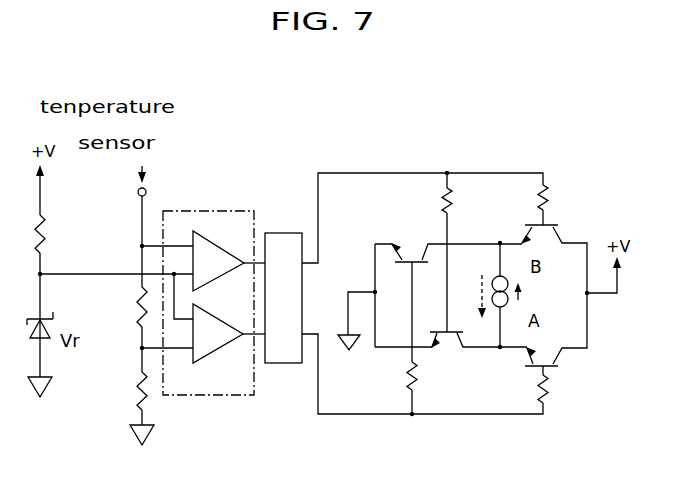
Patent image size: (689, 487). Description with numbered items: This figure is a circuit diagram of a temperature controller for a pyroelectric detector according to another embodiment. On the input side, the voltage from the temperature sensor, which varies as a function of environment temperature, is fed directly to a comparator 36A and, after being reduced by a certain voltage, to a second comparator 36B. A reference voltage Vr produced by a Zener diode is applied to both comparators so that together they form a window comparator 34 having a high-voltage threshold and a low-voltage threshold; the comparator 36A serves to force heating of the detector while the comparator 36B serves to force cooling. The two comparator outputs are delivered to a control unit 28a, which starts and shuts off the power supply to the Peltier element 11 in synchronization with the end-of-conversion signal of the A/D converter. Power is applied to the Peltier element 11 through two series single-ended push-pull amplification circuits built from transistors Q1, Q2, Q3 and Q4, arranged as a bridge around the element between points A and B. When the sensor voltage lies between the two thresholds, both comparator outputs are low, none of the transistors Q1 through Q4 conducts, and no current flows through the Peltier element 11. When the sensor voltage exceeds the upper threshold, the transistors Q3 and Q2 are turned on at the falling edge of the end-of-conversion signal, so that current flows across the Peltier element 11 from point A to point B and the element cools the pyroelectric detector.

The window comparator 34 is at (177, 211).
The comparator 36A is at (215, 240).
The comparator 36B is at (220, 355).
The control unit 28a is at (290, 232).
The Peltier element 11 is at (493, 277).
The transistor Q1 is at (556, 256).
The transistor Q2 is at (448, 316).
The transistor Q3 is at (558, 336).
The transistor Q4 is at (451, 355).